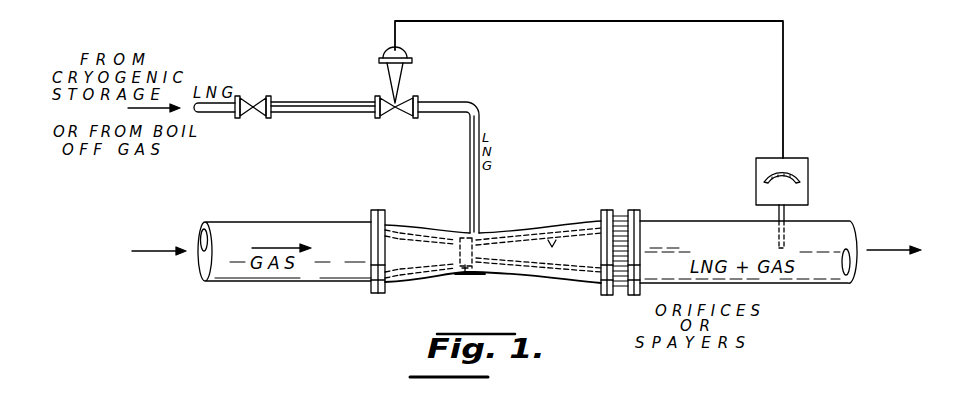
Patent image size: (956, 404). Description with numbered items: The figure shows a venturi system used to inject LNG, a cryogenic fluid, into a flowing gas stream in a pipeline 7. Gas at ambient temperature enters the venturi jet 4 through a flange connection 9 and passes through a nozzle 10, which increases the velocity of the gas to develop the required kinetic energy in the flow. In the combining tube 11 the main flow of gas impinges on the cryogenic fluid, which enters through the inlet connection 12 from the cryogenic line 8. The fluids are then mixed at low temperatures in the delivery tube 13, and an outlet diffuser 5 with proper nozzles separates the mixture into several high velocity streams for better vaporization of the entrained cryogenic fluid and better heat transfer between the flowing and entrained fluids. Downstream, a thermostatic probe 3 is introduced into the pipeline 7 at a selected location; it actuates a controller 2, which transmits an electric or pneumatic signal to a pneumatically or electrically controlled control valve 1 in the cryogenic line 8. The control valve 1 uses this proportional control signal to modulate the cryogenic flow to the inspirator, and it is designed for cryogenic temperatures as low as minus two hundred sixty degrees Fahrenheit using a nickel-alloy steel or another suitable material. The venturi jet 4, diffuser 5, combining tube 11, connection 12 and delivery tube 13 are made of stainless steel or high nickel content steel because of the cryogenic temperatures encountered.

The control valve 1 is at (404, 73).
The controller 2 is at (808, 171).
The thermostatic probe 3 is at (787, 237).
The venturi jet 4 is at (433, 279).
The outlet diffuser 5 is at (632, 216).
The pipeline 7 is at (838, 237).
The cryogenic line 8 is at (222, 109).
The flange connection 9 is at (393, 231).
The nozzle 10 is at (432, 246).
The combining tube 11 is at (470, 278).
The inlet connection 12 is at (478, 240).
The delivery tube 13 is at (553, 241).